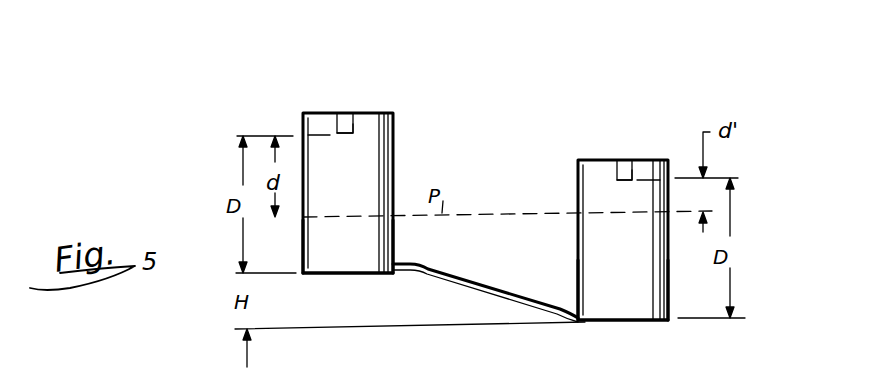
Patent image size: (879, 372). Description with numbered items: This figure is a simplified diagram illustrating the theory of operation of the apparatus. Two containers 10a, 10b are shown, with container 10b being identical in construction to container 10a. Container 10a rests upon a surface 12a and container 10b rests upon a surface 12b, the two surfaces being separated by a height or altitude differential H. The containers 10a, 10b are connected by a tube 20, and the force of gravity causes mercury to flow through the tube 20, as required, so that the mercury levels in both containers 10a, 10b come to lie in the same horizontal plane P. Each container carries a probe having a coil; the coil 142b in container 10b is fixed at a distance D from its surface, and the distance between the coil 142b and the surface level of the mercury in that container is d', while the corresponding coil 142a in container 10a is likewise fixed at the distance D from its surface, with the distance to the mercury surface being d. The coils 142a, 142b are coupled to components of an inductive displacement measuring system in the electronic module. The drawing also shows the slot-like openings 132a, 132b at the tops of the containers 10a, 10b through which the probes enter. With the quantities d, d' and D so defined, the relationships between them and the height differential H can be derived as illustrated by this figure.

The container 10a is at (392, 187).
The container 10b is at (576, 185).
The surface 12a is at (275, 272).
The surface 12b is at (692, 318).
The tube 20 is at (500, 288).
The slot of first member 132a is at (347, 112).
The slot of second member 132b is at (624, 159).
The coil 142a is at (351, 132).
The coil 142b is at (630, 180).